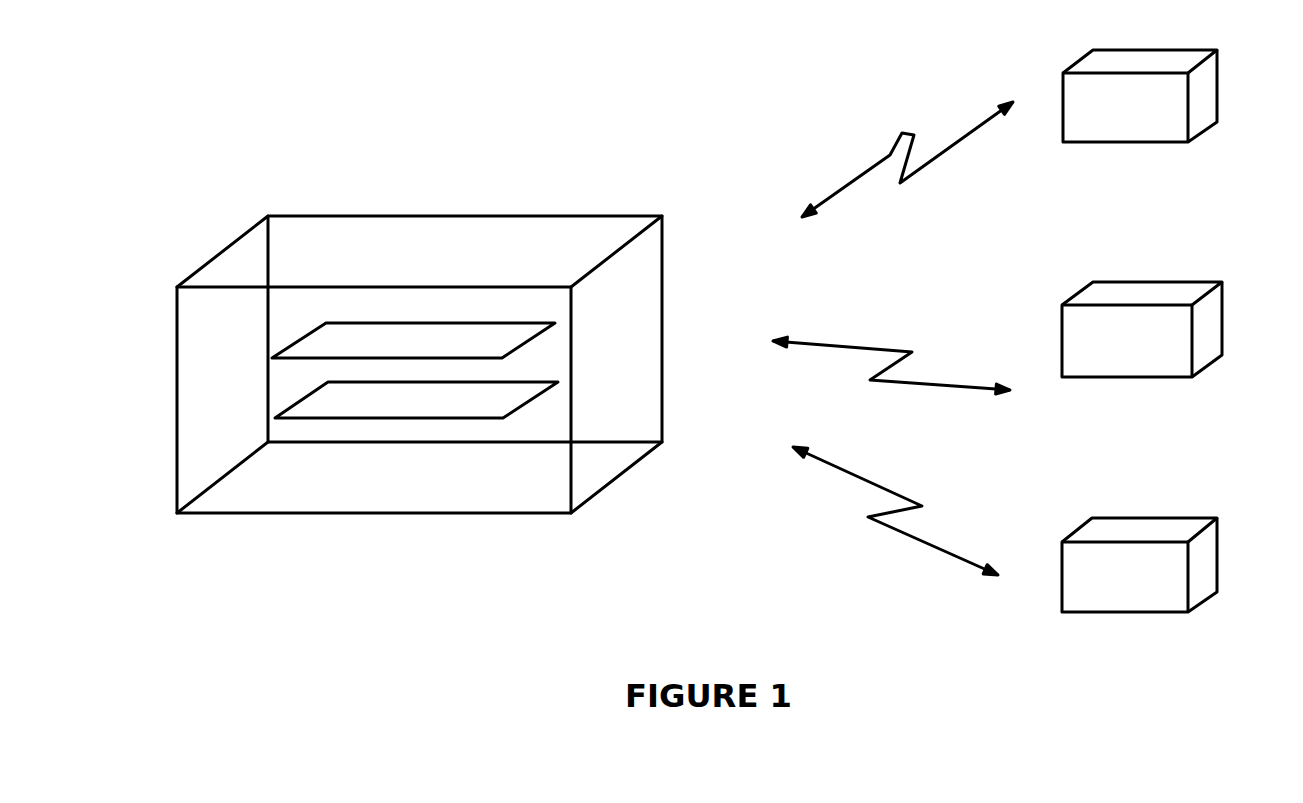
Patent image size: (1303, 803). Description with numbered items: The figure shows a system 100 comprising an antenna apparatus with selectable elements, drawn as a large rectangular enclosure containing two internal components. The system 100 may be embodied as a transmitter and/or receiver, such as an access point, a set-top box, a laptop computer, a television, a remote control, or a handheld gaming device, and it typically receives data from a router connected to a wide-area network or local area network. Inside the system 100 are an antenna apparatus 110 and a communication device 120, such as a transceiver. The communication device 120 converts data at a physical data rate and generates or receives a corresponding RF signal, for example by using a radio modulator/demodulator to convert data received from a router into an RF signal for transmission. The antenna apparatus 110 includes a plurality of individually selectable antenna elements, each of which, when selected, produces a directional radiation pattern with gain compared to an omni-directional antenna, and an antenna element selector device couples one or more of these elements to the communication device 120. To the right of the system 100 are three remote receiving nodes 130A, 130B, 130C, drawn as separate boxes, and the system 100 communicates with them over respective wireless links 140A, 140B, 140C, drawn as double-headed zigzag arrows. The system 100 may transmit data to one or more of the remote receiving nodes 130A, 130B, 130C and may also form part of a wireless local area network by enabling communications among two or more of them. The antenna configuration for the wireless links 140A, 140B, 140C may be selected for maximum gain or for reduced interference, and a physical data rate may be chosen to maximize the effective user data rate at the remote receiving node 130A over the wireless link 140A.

The system 100 is at (419, 361).
The antenna apparatus 110 is at (510, 336).
The communication device 120 is at (511, 396).
The remote receiving node 130A is at (1155, 83).
The remote receiving node 130B is at (1155, 316).
The remote receiving node 130C is at (1154, 551).
The wireless link 140A is at (890, 155).
The wireless link 140B is at (885, 348).
The wireless link 140C is at (883, 527).